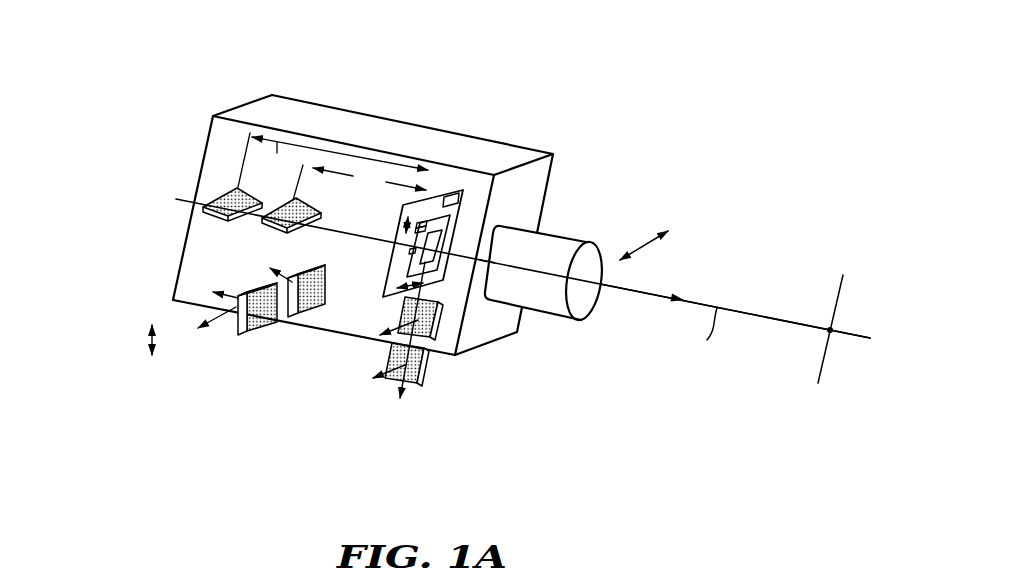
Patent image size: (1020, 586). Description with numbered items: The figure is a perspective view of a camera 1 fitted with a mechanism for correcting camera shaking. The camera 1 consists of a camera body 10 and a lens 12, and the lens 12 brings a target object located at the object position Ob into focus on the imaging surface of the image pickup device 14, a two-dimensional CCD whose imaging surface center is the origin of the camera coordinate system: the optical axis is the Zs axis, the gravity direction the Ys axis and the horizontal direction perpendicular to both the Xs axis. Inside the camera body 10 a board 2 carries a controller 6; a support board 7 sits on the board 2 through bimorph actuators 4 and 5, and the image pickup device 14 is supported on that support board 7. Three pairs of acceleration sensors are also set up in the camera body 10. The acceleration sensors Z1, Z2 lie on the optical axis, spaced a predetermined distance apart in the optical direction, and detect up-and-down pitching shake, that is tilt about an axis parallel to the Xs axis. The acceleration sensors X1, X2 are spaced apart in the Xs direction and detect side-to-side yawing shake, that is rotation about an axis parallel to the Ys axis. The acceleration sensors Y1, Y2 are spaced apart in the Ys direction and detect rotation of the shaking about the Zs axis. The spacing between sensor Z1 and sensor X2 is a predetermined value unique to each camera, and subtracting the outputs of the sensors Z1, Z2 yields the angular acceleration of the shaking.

The camera 1 is at (520, 80).
The board 2 is at (420, 228).
The bimorph actuator 4 is at (413, 222).
The bimorph actuator 5 is at (400, 272).
The controller 6 is at (461, 205).
The support board 7 is at (452, 230).
The camera body 10 is at (508, 152).
The lens 12 is at (545, 240).
The image pickup device 14 is at (438, 250).
The acceleration sensor X1 is at (302, 312).
The acceleration sensor X2 is at (240, 312).
The acceleration sensor Y1 is at (470, 242).
The acceleration sensor Y2 is at (385, 392).
The acceleration sensor Z1 is at (290, 226).
The acceleration sensor Z2 is at (223, 190).